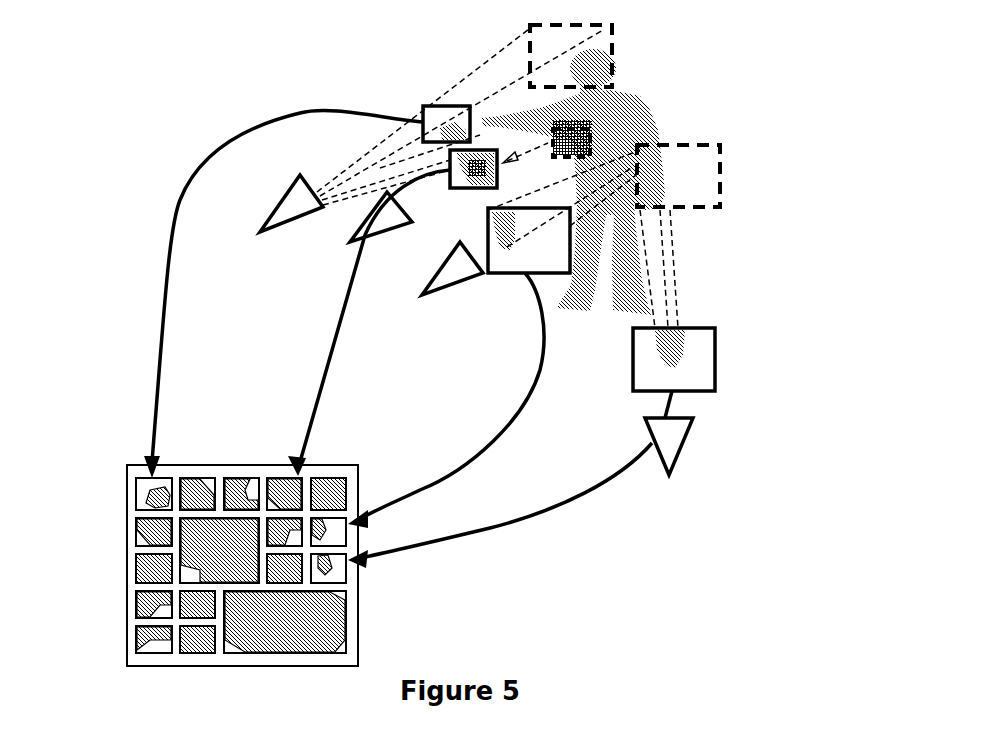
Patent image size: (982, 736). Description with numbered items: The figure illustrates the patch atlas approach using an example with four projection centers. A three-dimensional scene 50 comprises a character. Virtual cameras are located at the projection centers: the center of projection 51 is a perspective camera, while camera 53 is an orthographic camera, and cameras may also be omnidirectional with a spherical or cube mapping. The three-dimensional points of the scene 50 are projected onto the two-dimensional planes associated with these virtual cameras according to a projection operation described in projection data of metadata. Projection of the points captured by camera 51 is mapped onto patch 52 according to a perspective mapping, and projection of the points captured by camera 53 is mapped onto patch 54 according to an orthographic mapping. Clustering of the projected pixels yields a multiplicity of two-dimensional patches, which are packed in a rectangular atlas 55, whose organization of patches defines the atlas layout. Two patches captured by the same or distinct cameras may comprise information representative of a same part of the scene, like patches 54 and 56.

The 3D scene 50 is at (645, 95).
The center of projection 51 is at (270, 197).
The patch 52 is at (423, 106).
The camera 53 is at (687, 447).
The patch 54 is at (715, 358).
The rectangular atlas 55 is at (360, 600).
The patch 56 is at (505, 275).